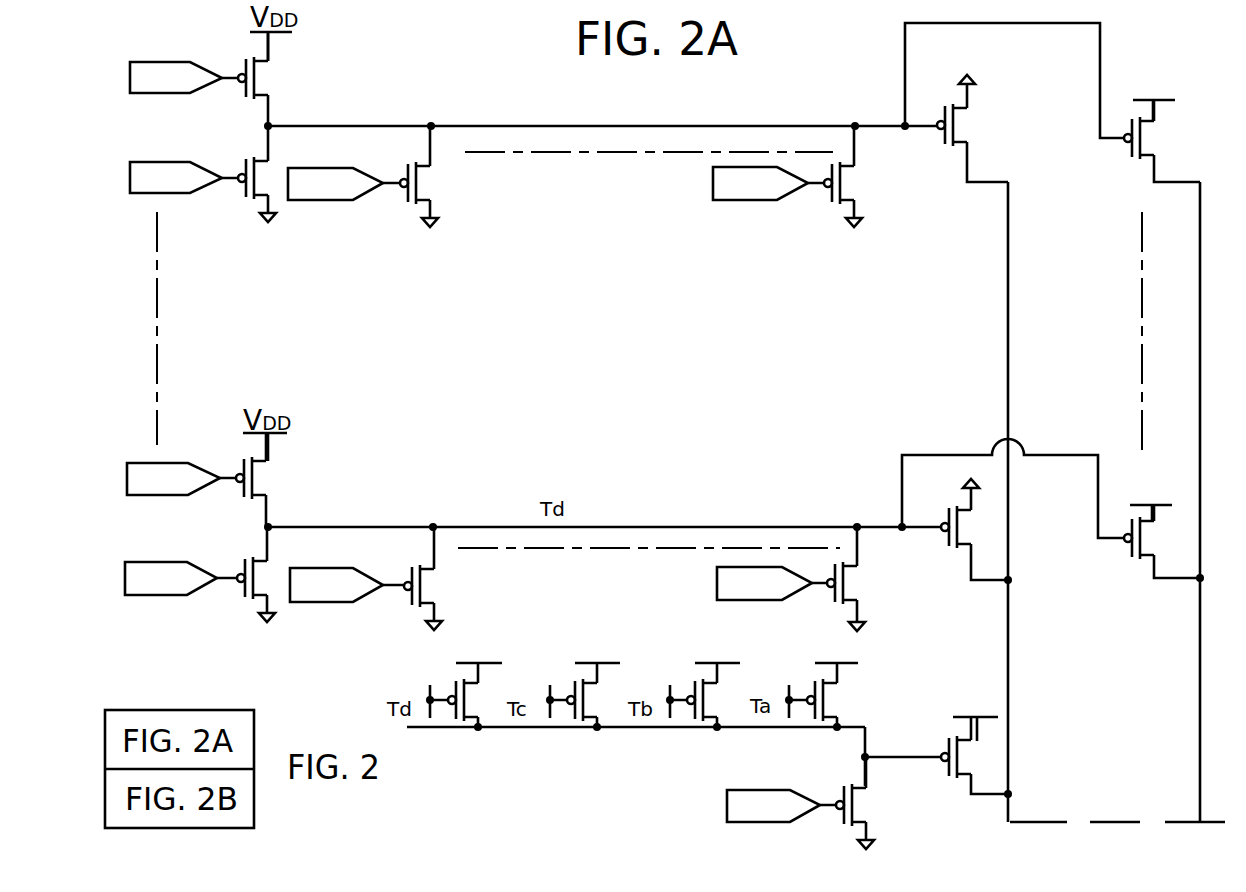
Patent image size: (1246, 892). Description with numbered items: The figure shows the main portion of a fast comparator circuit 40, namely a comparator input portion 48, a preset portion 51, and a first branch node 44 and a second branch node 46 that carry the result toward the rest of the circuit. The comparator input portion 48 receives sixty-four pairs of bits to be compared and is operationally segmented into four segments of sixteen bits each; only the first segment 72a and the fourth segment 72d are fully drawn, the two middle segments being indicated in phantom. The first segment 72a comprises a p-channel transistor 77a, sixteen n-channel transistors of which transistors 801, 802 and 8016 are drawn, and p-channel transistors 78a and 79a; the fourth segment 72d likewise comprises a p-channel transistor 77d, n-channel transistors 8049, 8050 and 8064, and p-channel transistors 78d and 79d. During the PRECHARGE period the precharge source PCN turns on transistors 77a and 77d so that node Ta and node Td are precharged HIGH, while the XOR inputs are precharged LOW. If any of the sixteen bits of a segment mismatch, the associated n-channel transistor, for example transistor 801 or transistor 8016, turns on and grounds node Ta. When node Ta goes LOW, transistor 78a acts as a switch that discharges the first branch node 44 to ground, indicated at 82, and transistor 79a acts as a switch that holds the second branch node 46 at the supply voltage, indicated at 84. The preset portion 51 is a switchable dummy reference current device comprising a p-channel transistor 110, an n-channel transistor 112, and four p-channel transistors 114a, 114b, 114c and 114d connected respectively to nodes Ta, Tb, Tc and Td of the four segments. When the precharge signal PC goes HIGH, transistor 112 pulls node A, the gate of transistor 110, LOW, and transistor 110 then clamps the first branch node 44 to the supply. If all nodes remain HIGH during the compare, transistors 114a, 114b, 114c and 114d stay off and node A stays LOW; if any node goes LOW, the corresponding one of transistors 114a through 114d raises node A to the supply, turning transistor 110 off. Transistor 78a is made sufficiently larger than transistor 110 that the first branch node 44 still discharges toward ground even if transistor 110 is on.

The fast comparator circuit 40 is at (437, 84).
The first branch node 44 is at (1010, 360).
The second branch node 46 is at (1202, 353).
The comparator input portion 48 is at (235, 258).
The preset portion 51 is at (697, 790).
The first segment 72a is at (178, 127).
The fourth segment 72d is at (190, 528).
The p-channel transistor 77a is at (255, 83).
The p-channel transistor 77d is at (255, 480).
The p-channel transistor 78a is at (958, 129).
The p-channel transistor 78d is at (960, 528).
The p-channel transistor 79a is at (1128, 143).
The p-channel transistor 79d is at (1123, 543).
The n-channel transistor 801 is at (257, 177).
The n-channel transistor 802 is at (425, 184).
The n-channel transistor 8016 is at (830, 193).
The n-channel transistor 8049 is at (240, 588).
The n-channel transistor 8050 is at (423, 588).
The n-channel transistor 8064 is at (848, 586).
The ground 82 is at (963, 77).
The VDD 84 is at (1150, 68).
The p-channel transistor 110 is at (960, 750).
The n-channel transistor 112 is at (853, 810).
The p-channel transistor 114a is at (830, 702).
The p-channel transistor 114b is at (710, 702).
The p-channel transistor 114c is at (590, 702).
The p-channel transistor 114d is at (470, 702).